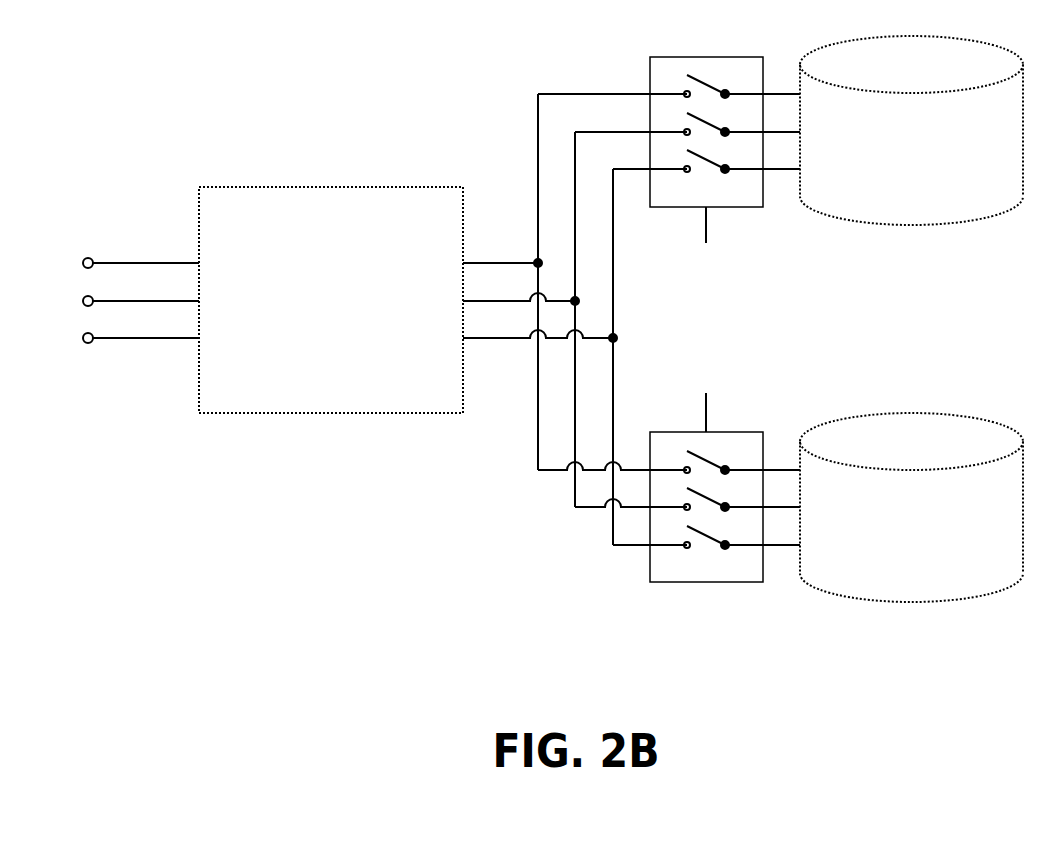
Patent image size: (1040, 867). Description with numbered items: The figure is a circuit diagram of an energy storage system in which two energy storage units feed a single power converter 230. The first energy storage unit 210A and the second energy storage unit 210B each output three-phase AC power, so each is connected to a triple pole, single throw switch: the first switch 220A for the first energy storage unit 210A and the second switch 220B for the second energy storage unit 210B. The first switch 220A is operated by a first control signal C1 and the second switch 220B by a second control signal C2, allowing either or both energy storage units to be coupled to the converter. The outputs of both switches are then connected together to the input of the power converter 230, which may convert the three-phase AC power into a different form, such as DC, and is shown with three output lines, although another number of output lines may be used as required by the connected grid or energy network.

The power converter 230 is at (331, 300).
The first switch 220A is at (727, 57).
The second switch 220B is at (724, 583).
The first energy storage unit 210A is at (911, 130).
The second energy storage unit 210B is at (911, 507).
The first control signal C1 is at (706, 244).
The second control signal C2 is at (706, 397).